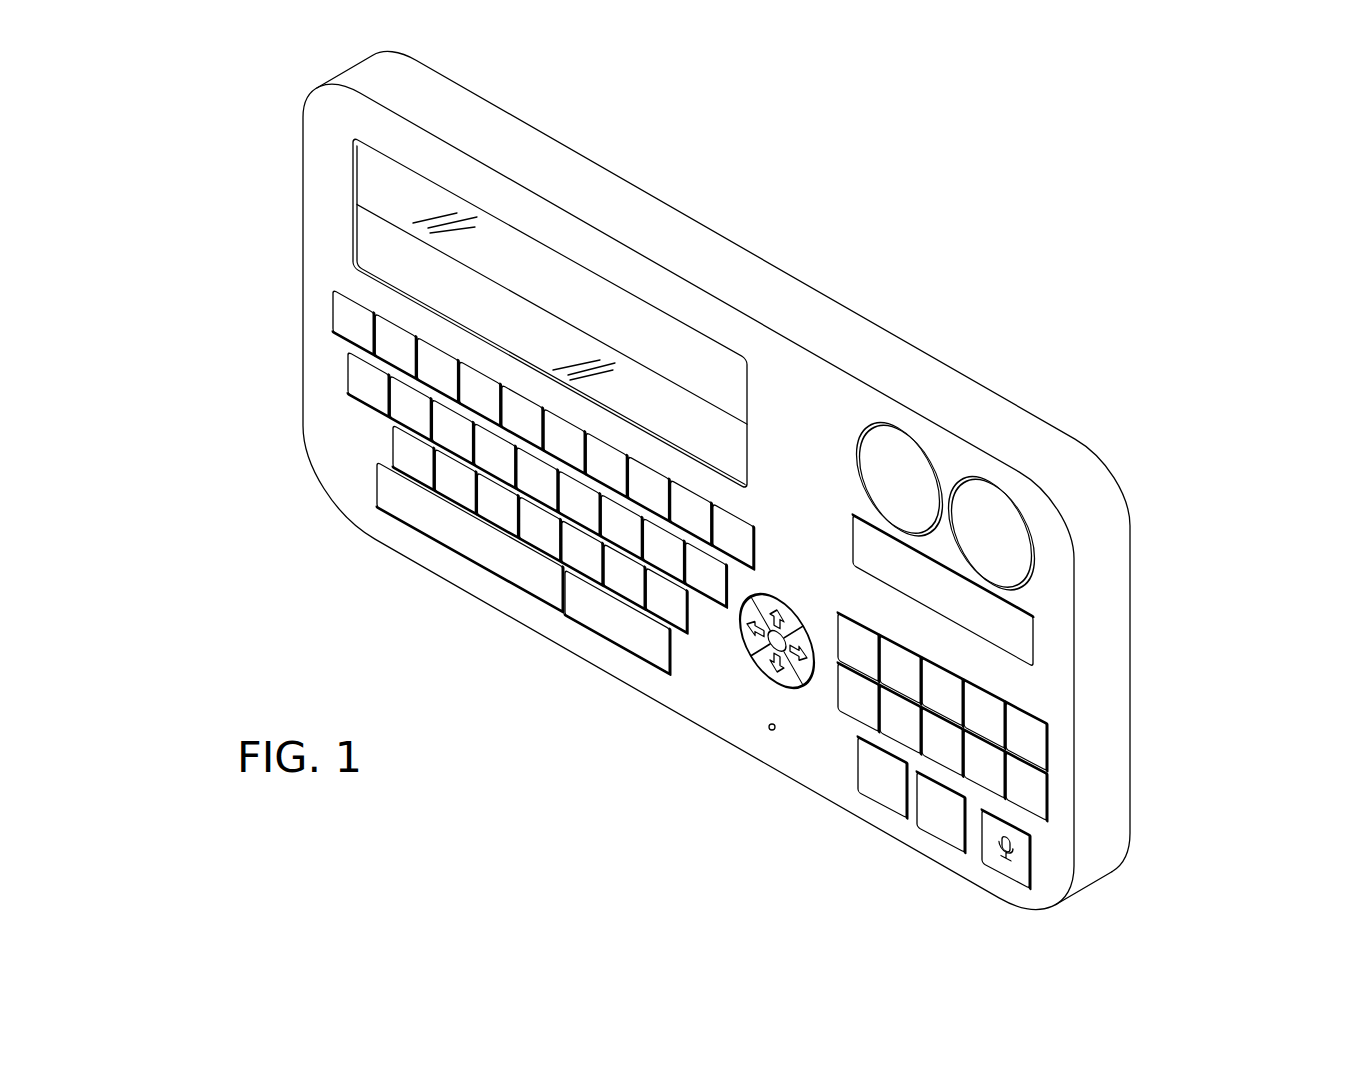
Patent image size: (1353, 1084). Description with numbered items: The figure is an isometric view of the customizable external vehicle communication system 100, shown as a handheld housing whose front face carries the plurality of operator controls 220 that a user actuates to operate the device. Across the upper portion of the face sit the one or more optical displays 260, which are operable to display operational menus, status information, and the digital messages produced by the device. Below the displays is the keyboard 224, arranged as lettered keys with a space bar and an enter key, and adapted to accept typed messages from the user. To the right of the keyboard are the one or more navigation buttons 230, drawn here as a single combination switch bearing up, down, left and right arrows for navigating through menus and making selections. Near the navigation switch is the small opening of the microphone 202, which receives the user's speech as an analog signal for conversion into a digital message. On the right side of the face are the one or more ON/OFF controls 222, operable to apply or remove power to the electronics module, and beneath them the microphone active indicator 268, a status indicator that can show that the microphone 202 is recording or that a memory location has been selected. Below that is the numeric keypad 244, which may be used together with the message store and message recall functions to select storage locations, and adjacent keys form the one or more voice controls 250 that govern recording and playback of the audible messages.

The customizable external vehicle communication system 100 is at (1004, 174).
The microphone 202 is at (769, 729).
The plurality of operator controls 220 is at (191, 470).
The ON/OFF controls 222 is at (990, 483).
The keyboard 224 is at (422, 520).
The navigation buttons 230 is at (753, 649).
The numeric keypad 244 is at (1035, 747).
The voice controls 250 is at (1143, 878).
The optical displays 260 is at (191, 100).
The microphone active indicator 268 is at (1035, 637).